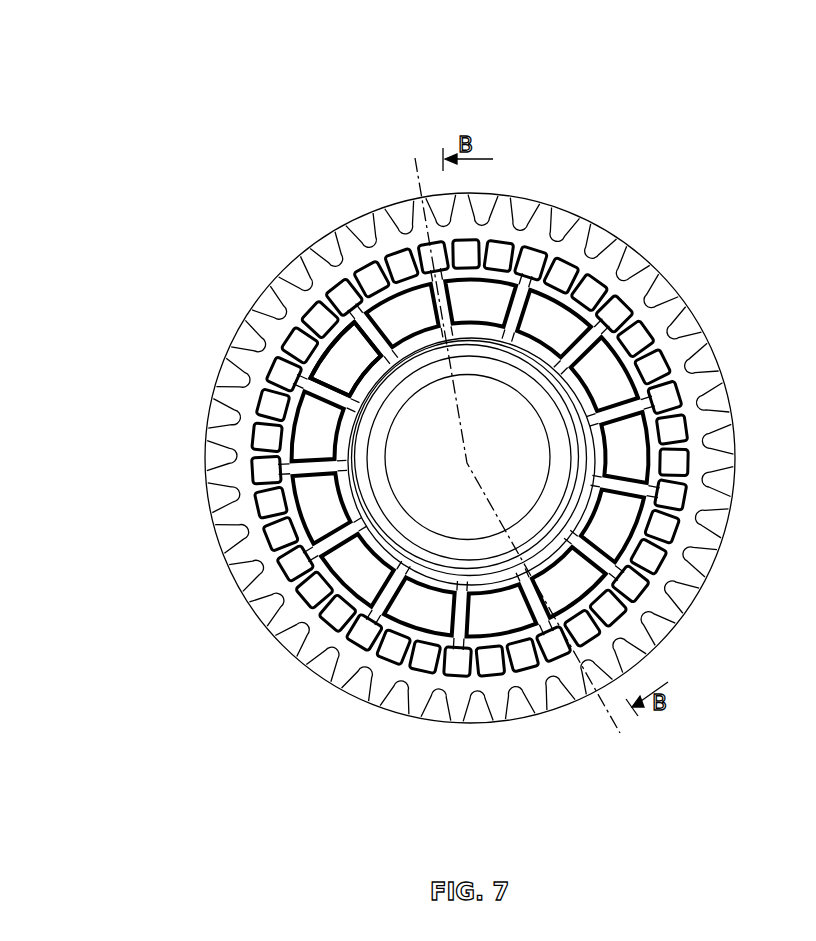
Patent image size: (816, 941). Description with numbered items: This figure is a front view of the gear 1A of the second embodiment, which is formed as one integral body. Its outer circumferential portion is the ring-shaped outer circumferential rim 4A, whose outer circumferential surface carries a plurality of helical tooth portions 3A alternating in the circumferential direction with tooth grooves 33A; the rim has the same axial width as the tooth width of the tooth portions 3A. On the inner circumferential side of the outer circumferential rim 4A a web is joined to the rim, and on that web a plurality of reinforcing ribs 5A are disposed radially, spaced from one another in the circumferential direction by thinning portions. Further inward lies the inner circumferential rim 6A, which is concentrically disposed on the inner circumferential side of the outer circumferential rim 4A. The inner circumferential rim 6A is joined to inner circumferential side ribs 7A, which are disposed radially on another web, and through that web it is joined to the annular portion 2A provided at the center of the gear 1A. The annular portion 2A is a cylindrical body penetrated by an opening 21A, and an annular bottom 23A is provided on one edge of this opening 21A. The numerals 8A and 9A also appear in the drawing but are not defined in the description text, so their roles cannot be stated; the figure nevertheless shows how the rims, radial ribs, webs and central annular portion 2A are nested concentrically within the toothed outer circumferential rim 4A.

The gear 1A is at (486, 29).
The annular portion 2A is at (350, 482).
The tooth portions 3A is at (384, 226).
The tooth grooves 33A is at (368, 242).
The outer circumferential rim 4A is at (312, 292).
The reinforcing ribs 5A is at (330, 286).
The inner circumferential rim 6A is at (332, 328).
The inner circumferential side ribs 7A is at (325, 392).
The magnet insertion hole 8A is at (340, 366).
The permanent magnet 9A is at (338, 373).
The opening 21A is at (500, 463).
The annular bottom 23A is at (377, 497).